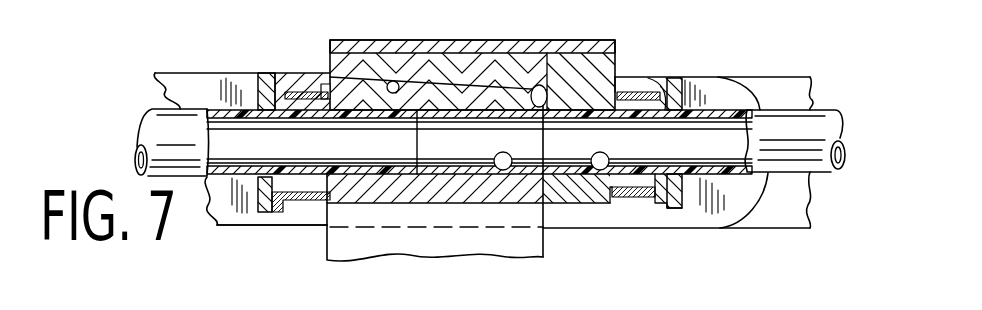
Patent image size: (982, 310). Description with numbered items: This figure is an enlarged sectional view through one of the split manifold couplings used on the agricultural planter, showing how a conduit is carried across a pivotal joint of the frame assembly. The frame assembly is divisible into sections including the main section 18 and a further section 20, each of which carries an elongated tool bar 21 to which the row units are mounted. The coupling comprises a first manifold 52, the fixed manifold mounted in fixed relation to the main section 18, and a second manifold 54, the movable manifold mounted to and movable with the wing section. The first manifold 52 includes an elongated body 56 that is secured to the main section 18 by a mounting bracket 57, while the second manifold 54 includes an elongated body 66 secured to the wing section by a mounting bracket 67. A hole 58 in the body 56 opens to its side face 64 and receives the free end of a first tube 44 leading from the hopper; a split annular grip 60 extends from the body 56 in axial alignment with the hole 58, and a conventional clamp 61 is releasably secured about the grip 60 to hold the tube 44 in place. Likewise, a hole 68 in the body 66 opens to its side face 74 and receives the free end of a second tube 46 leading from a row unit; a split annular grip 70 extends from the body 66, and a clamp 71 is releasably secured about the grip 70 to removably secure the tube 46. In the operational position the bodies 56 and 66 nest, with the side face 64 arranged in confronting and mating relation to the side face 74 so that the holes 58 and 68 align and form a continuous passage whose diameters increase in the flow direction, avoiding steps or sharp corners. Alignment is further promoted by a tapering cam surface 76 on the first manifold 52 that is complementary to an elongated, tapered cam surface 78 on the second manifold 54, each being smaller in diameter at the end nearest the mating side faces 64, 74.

The main section 18 is at (677, 0).
The section 20 is at (293, 226).
The tool bar 21 is at (795, 64).
The first tube 44 is at (817, 173).
The second tube 46 is at (148, 128).
The first manifold 52 is at (332, 58).
The second manifold 54 is at (392, 203).
The elongated body 56 is at (633, 77).
The mounting bracket 57 is at (351, 47).
The hole 58 is at (597, 170).
The split annular grip 60 is at (680, 200).
The clamp 61 is at (673, 78).
The side face 64 is at (535, 88).
The elongated body 66 is at (450, 190).
The mounting bracket 67 is at (398, 238).
The hole 68 is at (513, 170).
The split annular grip 70 is at (260, 84).
The clamp 71 is at (298, 90).
The side face 74 is at (542, 186).
The cam surface 76 is at (392, 80).
The cam surface 78 is at (428, 78).